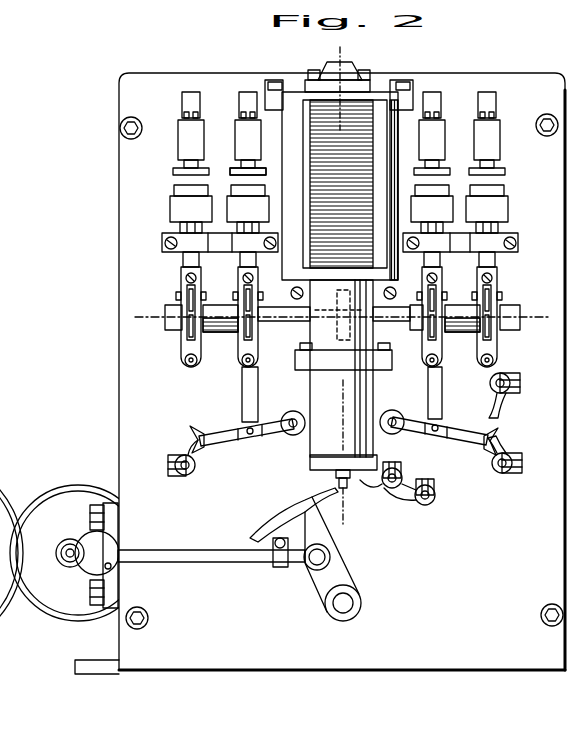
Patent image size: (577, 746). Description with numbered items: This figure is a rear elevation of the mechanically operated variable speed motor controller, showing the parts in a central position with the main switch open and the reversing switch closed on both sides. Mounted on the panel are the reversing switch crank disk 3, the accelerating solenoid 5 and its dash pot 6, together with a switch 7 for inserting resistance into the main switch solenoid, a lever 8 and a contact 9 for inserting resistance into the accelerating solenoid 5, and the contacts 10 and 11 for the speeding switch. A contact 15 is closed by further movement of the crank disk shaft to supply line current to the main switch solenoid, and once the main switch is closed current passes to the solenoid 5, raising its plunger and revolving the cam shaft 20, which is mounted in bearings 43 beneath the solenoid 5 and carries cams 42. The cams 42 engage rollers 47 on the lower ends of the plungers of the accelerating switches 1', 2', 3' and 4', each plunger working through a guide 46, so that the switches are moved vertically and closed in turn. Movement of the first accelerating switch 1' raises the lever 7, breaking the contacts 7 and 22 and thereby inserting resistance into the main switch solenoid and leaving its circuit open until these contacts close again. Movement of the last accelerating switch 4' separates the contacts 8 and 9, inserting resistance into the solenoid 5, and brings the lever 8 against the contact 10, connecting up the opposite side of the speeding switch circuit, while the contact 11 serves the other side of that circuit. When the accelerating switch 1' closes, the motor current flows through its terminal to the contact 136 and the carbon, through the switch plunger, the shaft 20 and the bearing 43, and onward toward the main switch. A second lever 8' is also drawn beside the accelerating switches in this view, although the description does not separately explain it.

The first accelerating switch 1' is at (248, 162).
The accelerating switch 2' is at (177, 166).
The accelerating switch 3' is at (487, 162).
The last accelerating switch 4' is at (432, 162).
The reversing switch crank disk 3 is at (73, 553).
The accelerating solenoid 5 is at (339, 173).
The dash pot 6 is at (343, 402).
The switch for inserting resistance into the main switch solenoid 7 is at (252, 438).
The lever 8 is at (340, 299).
The lever 8' is at (439, 421).
The contact for inserting resistance into the accelerating solenoid 9 is at (502, 446).
The contact for speeding switch 10 is at (498, 403).
The contact for speeding switch 11 is at (418, 502).
The contact 15 is at (312, 507).
The cam shaft 20 is at (172, 332).
The contact 22 is at (190, 452).
The cam 42 is at (192, 342).
The bearing 43 is at (250, 340).
The guide 46 is at (178, 246).
The roller 47 is at (246, 283).
The contact 136 is at (232, 170).